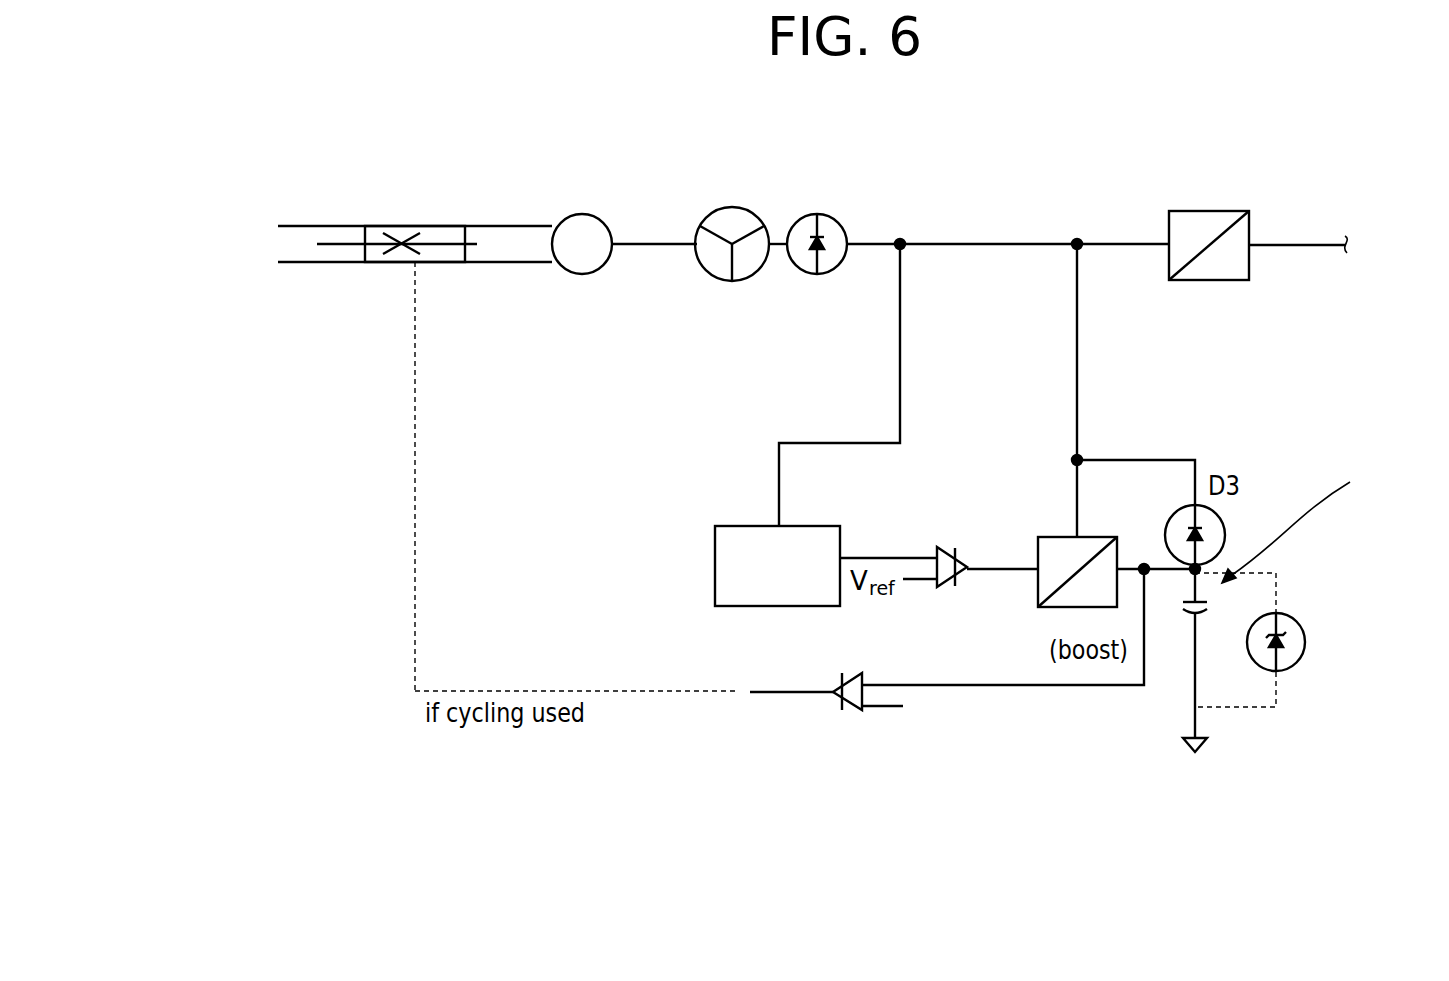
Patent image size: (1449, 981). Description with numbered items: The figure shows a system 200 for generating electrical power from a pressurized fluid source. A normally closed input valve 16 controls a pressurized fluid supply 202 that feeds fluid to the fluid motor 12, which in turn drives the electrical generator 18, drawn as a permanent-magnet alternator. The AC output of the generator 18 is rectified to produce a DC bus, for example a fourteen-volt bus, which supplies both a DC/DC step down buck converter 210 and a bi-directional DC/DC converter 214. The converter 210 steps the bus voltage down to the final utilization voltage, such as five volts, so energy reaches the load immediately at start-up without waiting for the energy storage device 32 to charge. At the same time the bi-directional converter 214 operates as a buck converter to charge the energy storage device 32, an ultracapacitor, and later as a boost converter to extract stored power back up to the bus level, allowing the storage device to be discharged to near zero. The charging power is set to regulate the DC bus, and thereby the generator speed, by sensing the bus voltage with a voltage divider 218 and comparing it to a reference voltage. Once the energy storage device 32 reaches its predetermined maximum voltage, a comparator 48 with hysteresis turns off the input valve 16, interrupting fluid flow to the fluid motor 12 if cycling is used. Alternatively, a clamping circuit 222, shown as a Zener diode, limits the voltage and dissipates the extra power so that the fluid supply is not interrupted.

The fluid motor 12 is at (600, 217).
The input valve 16 is at (458, 225).
The electrical generator 18 is at (750, 208).
The energy storage device 32 is at (1207, 605).
The comparator with hysteresis 48 is at (864, 677).
The system 200 is at (1244, 768).
The pressurized fluid supply 202 is at (278, 252).
The DC/DC step down buck converter 210 is at (1250, 215).
The bi-directional DC/DC converter 214 is at (1095, 537).
The voltage divider 218 is at (843, 540).
The clamping circuit 222 is at (1305, 642).